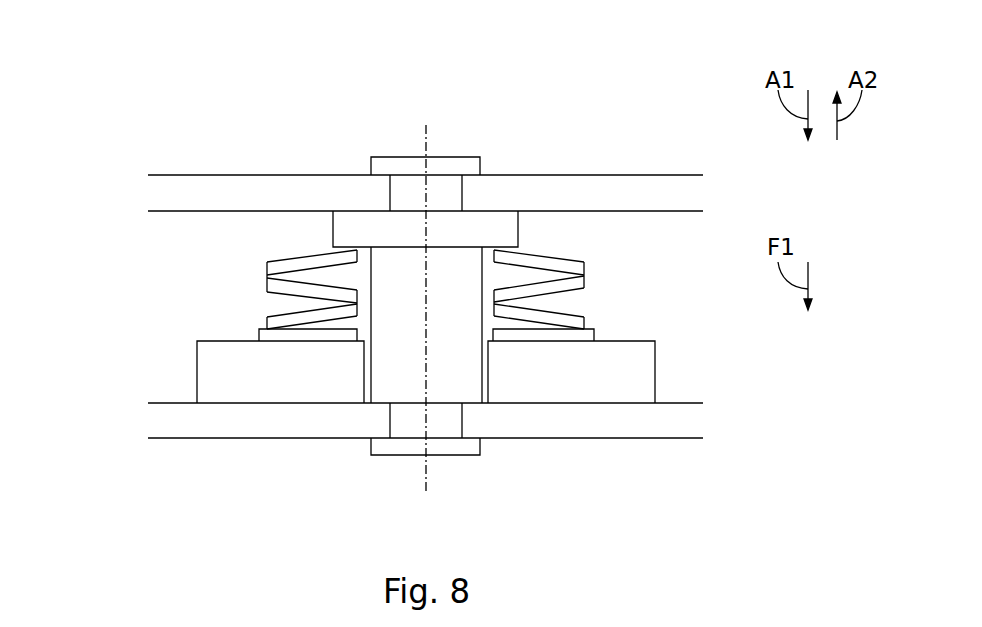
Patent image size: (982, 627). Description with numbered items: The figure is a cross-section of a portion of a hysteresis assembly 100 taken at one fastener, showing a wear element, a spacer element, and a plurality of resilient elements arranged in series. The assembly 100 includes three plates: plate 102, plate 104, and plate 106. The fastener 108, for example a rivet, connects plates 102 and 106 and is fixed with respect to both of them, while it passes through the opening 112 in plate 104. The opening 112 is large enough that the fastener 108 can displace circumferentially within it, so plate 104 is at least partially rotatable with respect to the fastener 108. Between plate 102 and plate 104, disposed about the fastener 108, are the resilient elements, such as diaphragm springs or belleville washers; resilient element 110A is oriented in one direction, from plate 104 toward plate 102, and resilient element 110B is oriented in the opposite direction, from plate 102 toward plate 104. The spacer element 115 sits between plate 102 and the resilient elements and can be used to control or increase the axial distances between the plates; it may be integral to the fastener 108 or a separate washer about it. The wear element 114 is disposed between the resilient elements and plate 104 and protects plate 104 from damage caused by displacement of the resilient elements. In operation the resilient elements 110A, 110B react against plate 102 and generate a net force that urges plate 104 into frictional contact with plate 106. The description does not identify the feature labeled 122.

The hysteresis assembly 100 is at (645, 154).
The plate 102 is at (190, 198).
The plate 104 is at (197, 375).
The plate 106 is at (153, 418).
The fastener 108 is at (385, 148).
The resilient element 110A is at (297, 257).
The resilient element 110B is at (547, 293).
The opening 112 is at (483, 438).
The wear element 114 is at (260, 339).
The spacer element 115 is at (518, 227).
The bolt shank / axis 122 is at (426, 273).